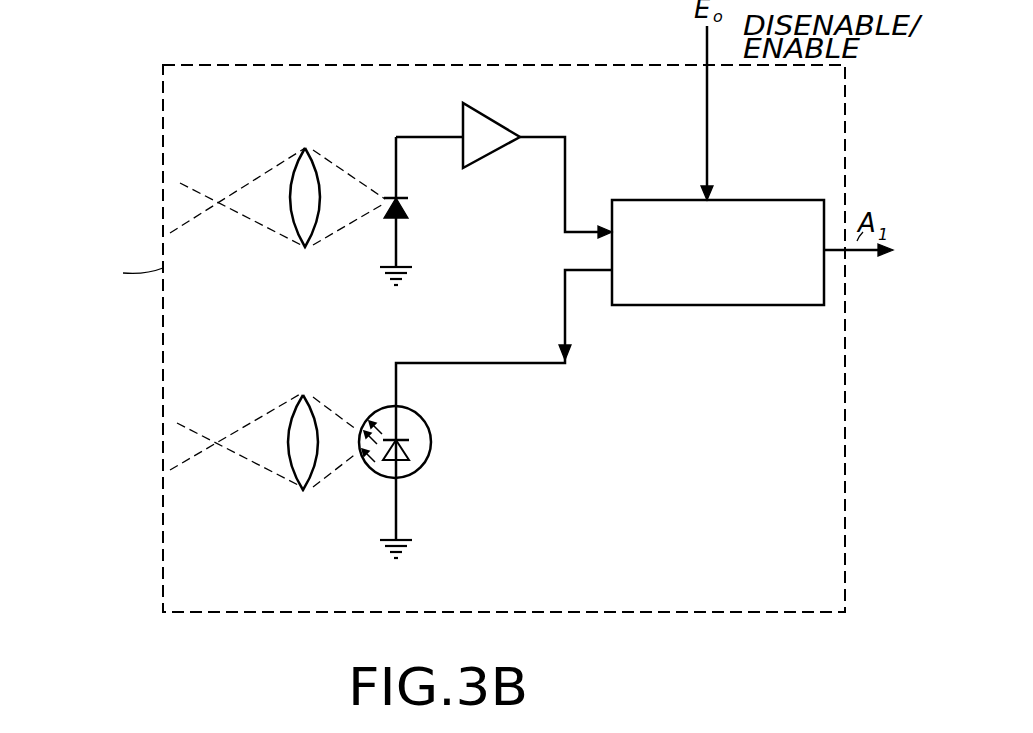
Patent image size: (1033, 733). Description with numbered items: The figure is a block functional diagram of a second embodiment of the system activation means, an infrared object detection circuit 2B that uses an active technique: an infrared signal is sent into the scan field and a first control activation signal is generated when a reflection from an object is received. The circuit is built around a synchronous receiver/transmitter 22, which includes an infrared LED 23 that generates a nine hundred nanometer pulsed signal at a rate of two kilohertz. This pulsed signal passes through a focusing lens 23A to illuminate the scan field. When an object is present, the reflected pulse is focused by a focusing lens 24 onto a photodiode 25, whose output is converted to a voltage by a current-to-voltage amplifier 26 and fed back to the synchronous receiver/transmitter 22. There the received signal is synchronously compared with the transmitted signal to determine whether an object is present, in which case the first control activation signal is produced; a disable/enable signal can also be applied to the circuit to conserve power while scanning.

The infrared object detection circuit 2B is at (163, 352).
The synchronous receiver/transmitter 22 is at (683, 305).
The infrared LED 23 is at (431, 447).
The focusing lens 23A is at (298, 485).
The focusing lens 24 is at (315, 150).
The photodiode 25 is at (404, 212).
The current-to-voltage amplifier 26 is at (497, 120).